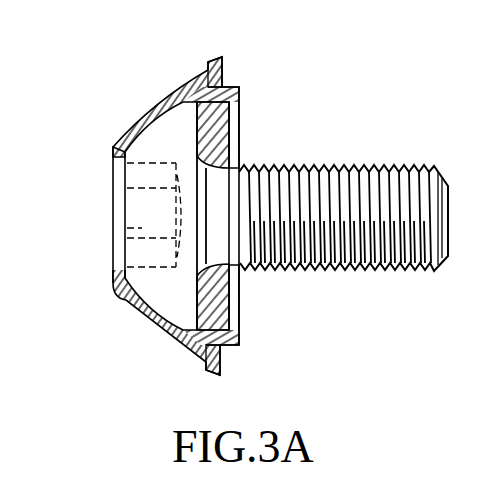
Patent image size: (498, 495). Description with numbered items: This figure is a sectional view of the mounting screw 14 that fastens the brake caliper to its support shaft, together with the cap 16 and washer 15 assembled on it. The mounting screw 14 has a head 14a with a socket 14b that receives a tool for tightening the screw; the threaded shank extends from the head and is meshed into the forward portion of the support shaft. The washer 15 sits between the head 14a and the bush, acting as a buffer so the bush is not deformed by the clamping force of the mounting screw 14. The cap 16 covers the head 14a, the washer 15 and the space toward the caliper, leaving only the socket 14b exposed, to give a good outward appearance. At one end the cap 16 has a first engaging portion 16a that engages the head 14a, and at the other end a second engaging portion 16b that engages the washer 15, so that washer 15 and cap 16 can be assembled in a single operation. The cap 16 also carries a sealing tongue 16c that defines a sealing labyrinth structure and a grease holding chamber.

The mounting screw 14 is at (340, 167).
The head 14a is at (165, 297).
The socket 14b is at (122, 230).
The washer 15 is at (218, 142).
The cap 16 is at (165, 97).
The first engaging portion 16a is at (114, 147).
The second engaging portion 16b is at (236, 105).
The sealing tongue 16c is at (208, 62).